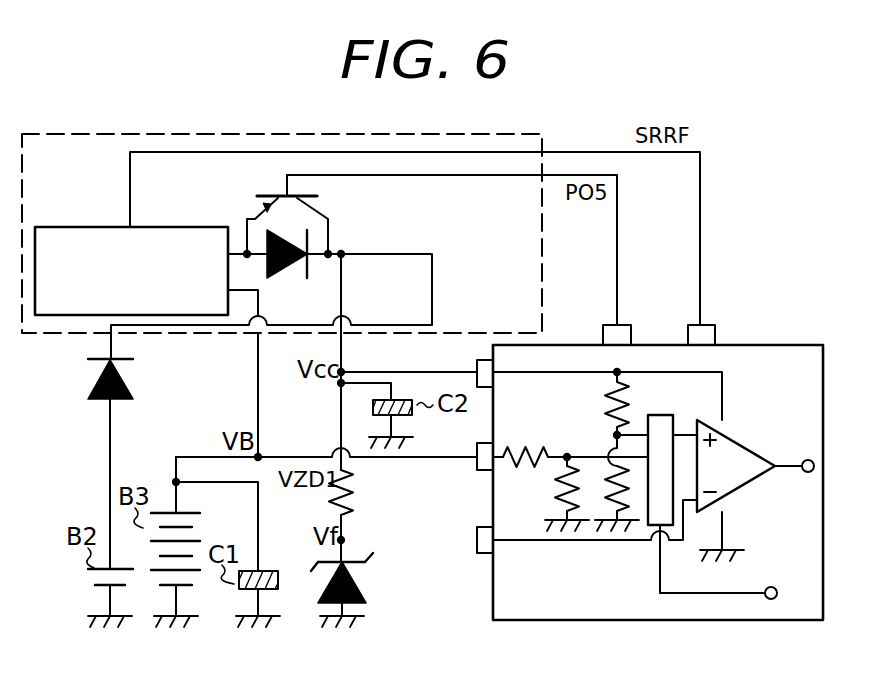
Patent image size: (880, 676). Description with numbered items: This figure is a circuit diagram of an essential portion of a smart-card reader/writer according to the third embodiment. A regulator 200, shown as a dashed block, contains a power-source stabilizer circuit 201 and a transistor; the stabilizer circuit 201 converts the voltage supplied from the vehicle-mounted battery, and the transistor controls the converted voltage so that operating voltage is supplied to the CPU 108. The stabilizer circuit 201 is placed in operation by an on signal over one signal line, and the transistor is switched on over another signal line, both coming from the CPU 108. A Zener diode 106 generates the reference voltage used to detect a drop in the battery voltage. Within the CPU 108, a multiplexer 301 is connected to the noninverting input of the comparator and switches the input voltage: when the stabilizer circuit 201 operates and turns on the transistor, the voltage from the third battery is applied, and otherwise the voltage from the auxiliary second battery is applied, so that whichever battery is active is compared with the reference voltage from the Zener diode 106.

The regulator 200 is at (104, 127).
The power-source stabilizer circuit 201 is at (99, 227).
The CPU 108 is at (777, 345).
The multiplexer 301 is at (662, 415).
The Zener diode 106 is at (365, 588).